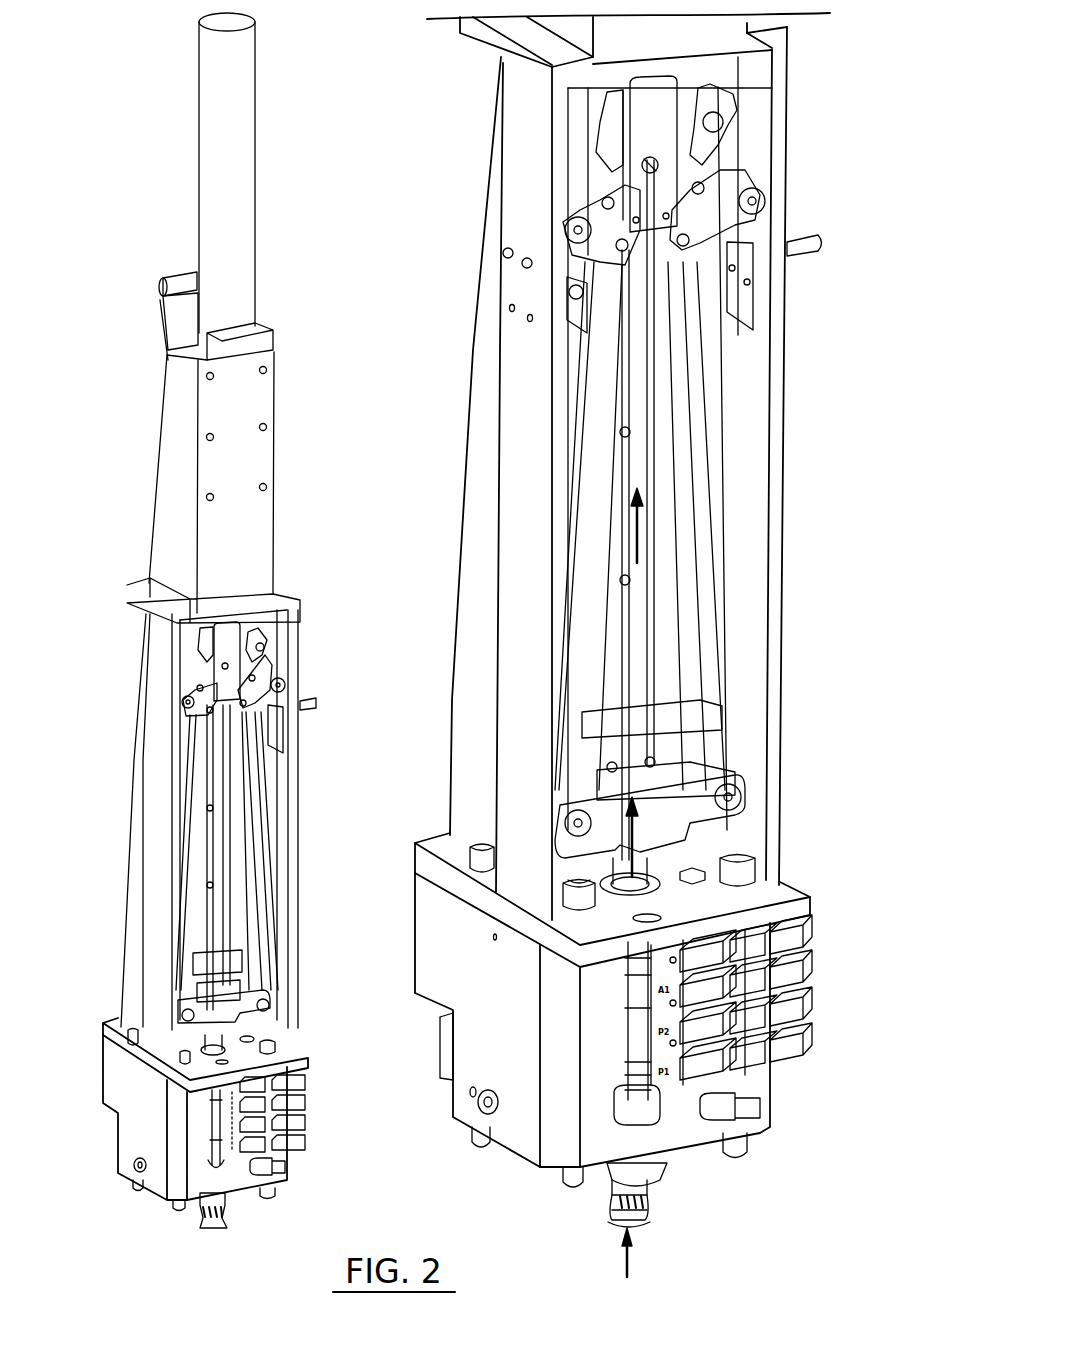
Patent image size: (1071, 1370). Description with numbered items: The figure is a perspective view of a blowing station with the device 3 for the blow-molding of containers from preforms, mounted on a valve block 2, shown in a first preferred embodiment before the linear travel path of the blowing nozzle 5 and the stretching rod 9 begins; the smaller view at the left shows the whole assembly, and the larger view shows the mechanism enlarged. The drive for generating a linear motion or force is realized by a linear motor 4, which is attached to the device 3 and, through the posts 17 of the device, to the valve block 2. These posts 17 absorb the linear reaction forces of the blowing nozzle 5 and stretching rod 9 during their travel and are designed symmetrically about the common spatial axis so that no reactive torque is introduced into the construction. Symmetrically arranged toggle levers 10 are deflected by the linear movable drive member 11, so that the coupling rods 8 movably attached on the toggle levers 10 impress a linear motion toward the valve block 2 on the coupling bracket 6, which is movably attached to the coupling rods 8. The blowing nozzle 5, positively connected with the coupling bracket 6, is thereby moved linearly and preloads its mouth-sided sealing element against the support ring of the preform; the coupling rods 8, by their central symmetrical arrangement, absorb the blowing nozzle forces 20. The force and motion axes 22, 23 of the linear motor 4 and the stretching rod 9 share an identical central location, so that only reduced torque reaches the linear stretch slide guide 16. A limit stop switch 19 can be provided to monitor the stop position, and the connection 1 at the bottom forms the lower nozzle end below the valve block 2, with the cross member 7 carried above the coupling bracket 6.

The nozzle / valve connection 1 is at (195, 1213).
The valve block 2 is at (150, 1128).
The device for the blow-molding of containers from preforms 3 is at (160, 843).
The linear motor 4 is at (188, 440).
The blowing nozzle 5 is at (670, 875).
The coupling bracket 6 is at (693, 808).
The cross member 7 is at (670, 728).
The coupling rods 8 is at (577, 652).
The stretching rod 9 is at (637, 613).
The toggle levers 10 is at (638, 183).
The linear movable drive member 11 is at (647, 115).
The linear stretch slide guide 16 is at (660, 587).
The posts of the device 17 is at (522, 385).
The limit stop switch 19 is at (808, 245).
The blowing nozzle forces 20 is at (627, 818).
The linear axis of motion of the linear drive 22 is at (772, 521).
The force axis of the stretching rod 23 is at (640, 530).